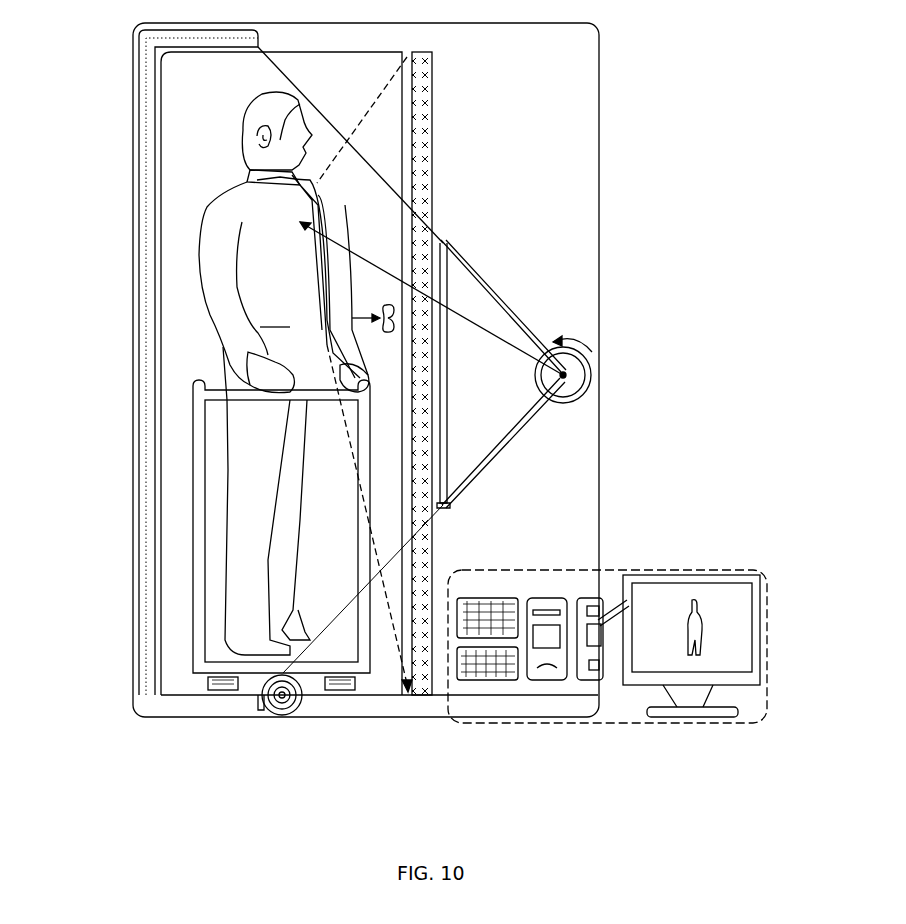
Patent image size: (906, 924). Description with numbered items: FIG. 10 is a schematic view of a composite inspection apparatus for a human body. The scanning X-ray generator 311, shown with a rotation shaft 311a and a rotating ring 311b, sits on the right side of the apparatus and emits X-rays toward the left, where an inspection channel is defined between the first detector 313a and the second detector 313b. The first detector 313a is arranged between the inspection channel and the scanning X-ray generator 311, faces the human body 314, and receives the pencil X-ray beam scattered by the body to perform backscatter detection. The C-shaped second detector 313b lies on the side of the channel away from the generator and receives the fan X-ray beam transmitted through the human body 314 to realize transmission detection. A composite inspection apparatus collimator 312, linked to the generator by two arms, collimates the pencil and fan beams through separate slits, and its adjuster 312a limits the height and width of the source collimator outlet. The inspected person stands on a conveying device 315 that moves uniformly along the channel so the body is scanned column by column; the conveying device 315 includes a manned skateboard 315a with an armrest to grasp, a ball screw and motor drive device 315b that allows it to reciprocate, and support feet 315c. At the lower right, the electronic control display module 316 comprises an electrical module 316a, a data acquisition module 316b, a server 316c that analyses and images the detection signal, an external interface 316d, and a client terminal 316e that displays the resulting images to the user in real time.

The scanning X-ray generator 311 is at (585, 402).
The rotation shaft 311a is at (590, 362).
The rotating ring 311b is at (596, 380).
The composite inspection apparatus collimator 312 is at (503, 297).
The adjuster 312a is at (446, 243).
The first detector 313a is at (432, 168).
The second detector 313b is at (146, 308).
The human body 314 is at (215, 235).
The conveying device 315 is at (190, 628).
The manned skateboard 315a is at (190, 590).
The ball screw and motor drive device 315b is at (285, 706).
The support feet 315c is at (343, 690).
The electronic control display module 316 is at (587, 678).
The electrical module 316a is at (457, 638).
The data acquisition module 316b is at (485, 680).
The server 316c is at (543, 667).
The external interface 316d is at (587, 683).
The client terminal 316e is at (643, 683).